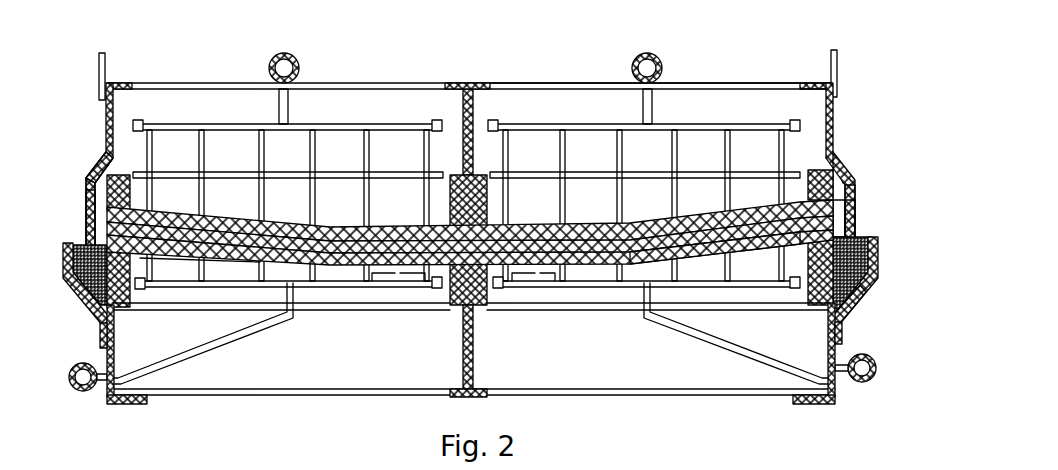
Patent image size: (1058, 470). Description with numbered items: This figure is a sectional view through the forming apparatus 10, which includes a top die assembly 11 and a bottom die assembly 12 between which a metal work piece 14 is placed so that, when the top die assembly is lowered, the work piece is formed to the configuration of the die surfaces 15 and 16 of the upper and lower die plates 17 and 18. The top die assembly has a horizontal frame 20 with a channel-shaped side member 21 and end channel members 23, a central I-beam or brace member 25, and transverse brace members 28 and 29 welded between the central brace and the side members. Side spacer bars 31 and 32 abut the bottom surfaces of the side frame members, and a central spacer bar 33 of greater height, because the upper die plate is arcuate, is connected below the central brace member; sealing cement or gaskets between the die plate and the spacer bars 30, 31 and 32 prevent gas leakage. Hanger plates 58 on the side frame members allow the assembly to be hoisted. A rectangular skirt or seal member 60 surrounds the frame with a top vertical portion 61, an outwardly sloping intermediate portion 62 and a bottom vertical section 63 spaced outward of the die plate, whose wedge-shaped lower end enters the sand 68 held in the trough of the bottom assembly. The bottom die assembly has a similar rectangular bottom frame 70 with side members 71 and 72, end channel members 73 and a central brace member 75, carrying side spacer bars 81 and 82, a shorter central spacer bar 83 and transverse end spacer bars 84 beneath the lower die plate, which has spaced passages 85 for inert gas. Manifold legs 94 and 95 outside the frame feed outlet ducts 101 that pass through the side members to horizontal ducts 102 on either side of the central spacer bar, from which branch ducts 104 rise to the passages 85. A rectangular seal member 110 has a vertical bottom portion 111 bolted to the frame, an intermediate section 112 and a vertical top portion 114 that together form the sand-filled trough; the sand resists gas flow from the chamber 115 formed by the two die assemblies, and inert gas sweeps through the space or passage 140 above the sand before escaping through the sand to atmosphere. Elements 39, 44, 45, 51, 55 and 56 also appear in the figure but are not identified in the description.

The forming apparatus 10 is at (777, 48).
The top die assembly 11 is at (531, 80).
The bottom die assembly 12 is at (346, 398).
The metal work piece 14 is at (838, 222).
The die surface of upper die plate 15 is at (748, 238).
The die surface of lower die plate 16 is at (767, 250).
The upper die plate 17 is at (694, 222).
The bottom die plate 18 is at (720, 256).
The horizontal frame 20 is at (813, 82).
The longitudinal channel shaped side member 21 is at (106, 118).
The end channel member 23 is at (488, 182).
The longitudinal central I-beam or brace member 25 is at (466, 83).
The transverse brace member 28 is at (366, 84).
The transverse brace member 29 is at (588, 84).
The spacer bar 30 is at (86, 204).
The longitudinal side spacer bar 31 is at (118, 180).
The longitudinal side spacer bar 32 is at (820, 172).
The longitudinal central spacer bar 33 is at (458, 185).
The cross rail 39 is at (394, 178).
The left roller 44 is at (268, 66).
The right roller 45 is at (663, 68).
The roller support post 51 is at (279, 97).
The upper rail 55 is at (334, 124).
The grid column 56 is at (560, 148).
The hanger plate 58 is at (105, 64).
The top seal member 60 is at (848, 172).
The top vertical portion 61 is at (104, 146).
The intermediate portion 62 is at (96, 175).
The bottom vertical section 63 is at (86, 212).
The sand 68 is at (862, 285).
The rectangular bottom frame 70 is at (109, 409).
The longitudinal channel shaped side member 71 is at (114, 355).
The longitudinal channel shaped side member 72 is at (828, 322).
The end channel member 73 is at (598, 378).
The longitudinal central I-beam or brace member 75 is at (475, 350).
The longitudinal side spacer bar 81 is at (131, 298).
The longitudinal side spacer bar 82 is at (808, 292).
The longitudinal central spacer bar 83 is at (450, 293).
The transverse end spacer bar 84 is at (336, 310).
The passages 85 is at (208, 262).
The longitudinal leg of manifold 94 is at (88, 392).
The longitudinal leg of manifold 95 is at (858, 384).
The outlet duct 101 is at (224, 338).
The horizontal duct 102 is at (220, 284).
The branch duct 104 is at (402, 283).
The bottom seal member 110 is at (849, 297).
The vertical bottom portion 111 is at (842, 328).
The intermediate section 112 is at (92, 313).
The vertical top portion 114 is at (885, 230).
The chamber 115 is at (842, 208).
The rectangular space or passage 140 is at (840, 178).